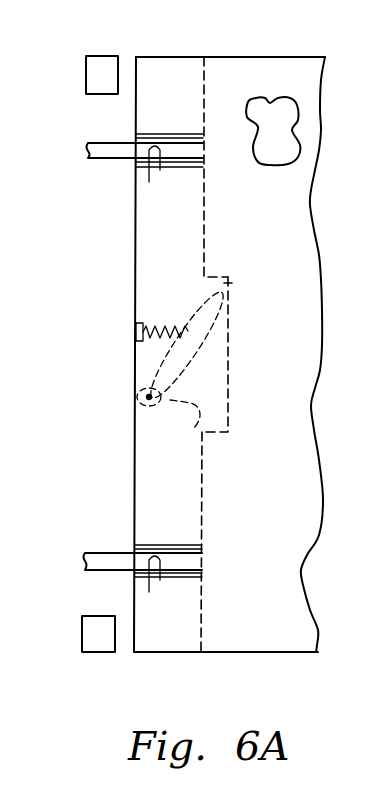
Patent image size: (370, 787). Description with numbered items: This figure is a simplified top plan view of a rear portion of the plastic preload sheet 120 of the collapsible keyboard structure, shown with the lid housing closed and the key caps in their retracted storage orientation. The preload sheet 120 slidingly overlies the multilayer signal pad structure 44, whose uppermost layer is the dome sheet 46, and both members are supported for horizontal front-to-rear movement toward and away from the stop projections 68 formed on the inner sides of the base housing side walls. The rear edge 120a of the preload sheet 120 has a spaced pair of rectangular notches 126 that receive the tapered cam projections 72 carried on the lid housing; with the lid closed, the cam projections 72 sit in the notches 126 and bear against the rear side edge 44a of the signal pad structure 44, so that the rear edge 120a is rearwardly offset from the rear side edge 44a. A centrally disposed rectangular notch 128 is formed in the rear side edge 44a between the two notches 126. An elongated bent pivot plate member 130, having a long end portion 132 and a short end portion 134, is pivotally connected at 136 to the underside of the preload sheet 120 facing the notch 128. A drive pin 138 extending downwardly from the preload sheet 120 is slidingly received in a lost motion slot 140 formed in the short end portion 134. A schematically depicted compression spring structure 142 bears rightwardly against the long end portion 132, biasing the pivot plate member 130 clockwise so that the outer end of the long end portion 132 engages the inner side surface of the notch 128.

The preload sheet 120 is at (280, 528).
The rear edge 120a is at (148, 493).
The dome sheet 46 is at (273, 120).
The stop projections 68 is at (97, 80).
The tapered cam projections 72 is at (100, 143).
The rectangular notches 126 is at (149, 168).
The signal pad structure 44 is at (203, 232).
The long end portion 132 is at (232, 282).
The rectangular notch 128 is at (226, 404).
The rear side edge 44a is at (193, 478).
The compression spring structure 142 is at (150, 327).
The pivot plate member 130 is at (205, 356).
The pivotal connection 136 is at (165, 365).
The drive pin 138 is at (148, 388).
The short end portion 134 is at (132, 415).
The lost motion slot 140 is at (170, 425).